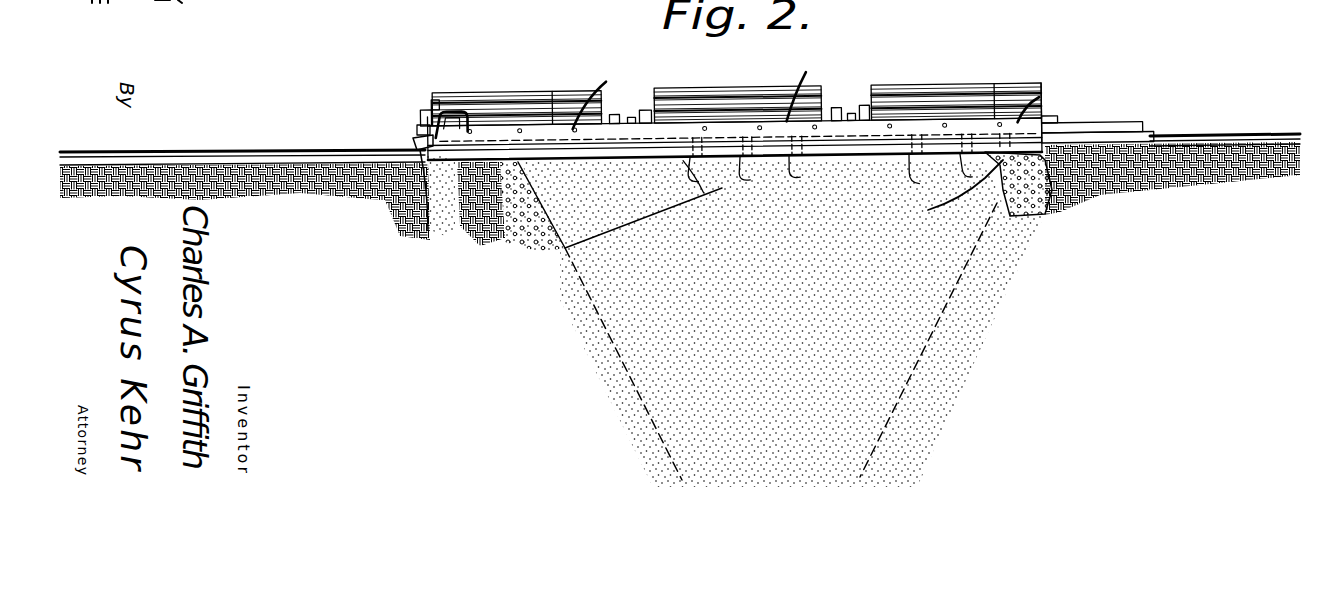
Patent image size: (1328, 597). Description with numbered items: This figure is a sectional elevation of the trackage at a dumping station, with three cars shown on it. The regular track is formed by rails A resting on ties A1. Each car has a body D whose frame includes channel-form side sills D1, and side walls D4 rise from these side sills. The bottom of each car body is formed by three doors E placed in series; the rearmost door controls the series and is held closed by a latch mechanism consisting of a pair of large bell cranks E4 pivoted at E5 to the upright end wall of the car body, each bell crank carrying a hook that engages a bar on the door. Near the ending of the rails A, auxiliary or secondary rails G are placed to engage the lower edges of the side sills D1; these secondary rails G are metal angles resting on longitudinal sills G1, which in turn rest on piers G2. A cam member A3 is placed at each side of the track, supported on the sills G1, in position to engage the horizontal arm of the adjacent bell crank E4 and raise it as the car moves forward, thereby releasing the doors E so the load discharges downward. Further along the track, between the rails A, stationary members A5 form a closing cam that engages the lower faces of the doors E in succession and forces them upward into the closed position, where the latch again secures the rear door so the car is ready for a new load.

The rails A is at (238, 124).
The ties A1 is at (1243, 175).
The cam member A3 is at (462, 114).
The stationary members A5 is at (1003, 160).
The body of the car D is at (500, 90).
The channel-form side sills D1 is at (1053, 92).
The side walls D4 is at (553, 107).
The doors E is at (778, 173).
The bell cranks E4 is at (428, 104).
The pivot E5 is at (428, 116).
The secondary rails G is at (1087, 124).
The longitudinal sills G1 is at (843, 152).
The piers G2 is at (533, 232).